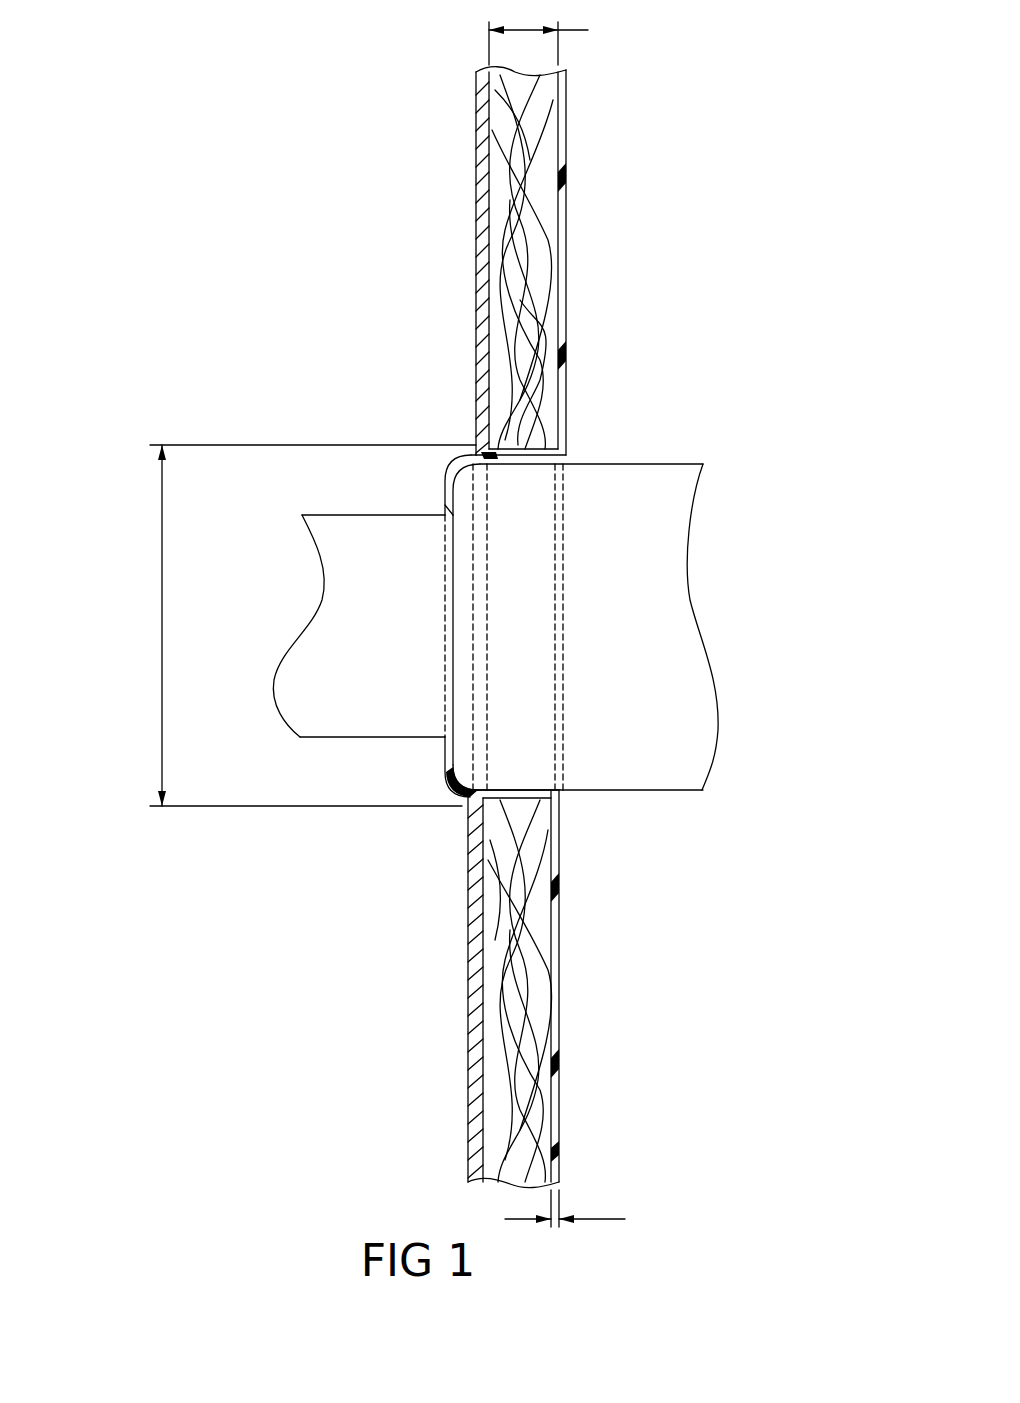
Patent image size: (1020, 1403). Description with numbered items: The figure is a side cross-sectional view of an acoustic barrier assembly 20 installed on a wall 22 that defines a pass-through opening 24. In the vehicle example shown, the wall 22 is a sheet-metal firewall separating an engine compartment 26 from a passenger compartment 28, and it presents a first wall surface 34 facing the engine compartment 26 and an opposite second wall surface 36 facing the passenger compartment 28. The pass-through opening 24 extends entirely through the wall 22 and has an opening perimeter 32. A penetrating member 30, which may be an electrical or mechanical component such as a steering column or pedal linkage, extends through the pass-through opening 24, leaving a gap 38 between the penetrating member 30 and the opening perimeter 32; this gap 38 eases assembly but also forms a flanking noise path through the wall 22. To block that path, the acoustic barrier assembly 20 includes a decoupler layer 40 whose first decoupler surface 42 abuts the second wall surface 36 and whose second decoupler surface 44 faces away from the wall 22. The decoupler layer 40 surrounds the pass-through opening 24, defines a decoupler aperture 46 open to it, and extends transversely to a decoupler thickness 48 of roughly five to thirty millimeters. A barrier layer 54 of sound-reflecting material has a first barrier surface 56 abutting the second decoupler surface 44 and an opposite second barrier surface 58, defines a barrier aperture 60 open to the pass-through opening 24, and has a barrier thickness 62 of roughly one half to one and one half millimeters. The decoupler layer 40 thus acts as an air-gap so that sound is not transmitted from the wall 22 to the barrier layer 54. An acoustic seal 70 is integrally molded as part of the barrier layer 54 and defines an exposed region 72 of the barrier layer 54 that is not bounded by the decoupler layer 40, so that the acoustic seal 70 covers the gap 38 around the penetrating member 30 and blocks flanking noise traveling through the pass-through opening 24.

The acoustic barrier assembly 20 is at (272, 235).
The wall 22 is at (480, 303).
The pass-through opening 24 is at (480, 622).
The engine compartment 26 is at (97, 620).
The passenger compartment 28 is at (757, 617).
The penetrating member 30 is at (326, 712).
The opening perimeter 32 is at (311, 625).
The first wall surface 34 is at (454, 957).
The second wall surface 36 is at (497, 977).
The gap 38 is at (480, 449).
The decoupler layer 40 is at (503, 115).
The first decoupler surface 42 is at (474, 176).
The second decoupler surface 44 is at (580, 148).
The decoupler aperture 46 is at (530, 522).
The decoupler thickness 48 is at (551, 41).
The barrier layer 54 is at (566, 297).
The first barrier surface 56 is at (537, 1106).
The second barrier surface 58 is at (573, 1127).
The barrier aperture 60 is at (431, 597).
The barrier thickness 62 is at (582, 1211).
The acoustic seal 70 is at (431, 460).
The exposed region 72 is at (445, 750).